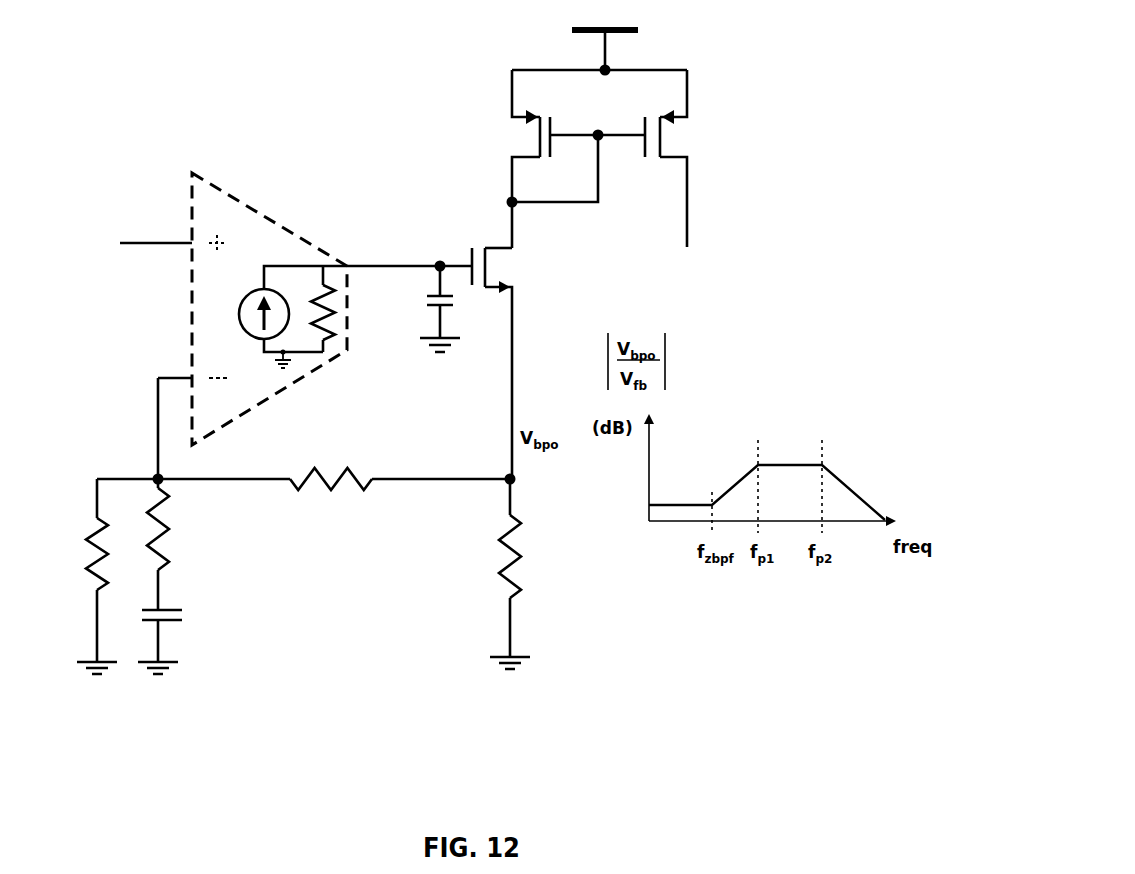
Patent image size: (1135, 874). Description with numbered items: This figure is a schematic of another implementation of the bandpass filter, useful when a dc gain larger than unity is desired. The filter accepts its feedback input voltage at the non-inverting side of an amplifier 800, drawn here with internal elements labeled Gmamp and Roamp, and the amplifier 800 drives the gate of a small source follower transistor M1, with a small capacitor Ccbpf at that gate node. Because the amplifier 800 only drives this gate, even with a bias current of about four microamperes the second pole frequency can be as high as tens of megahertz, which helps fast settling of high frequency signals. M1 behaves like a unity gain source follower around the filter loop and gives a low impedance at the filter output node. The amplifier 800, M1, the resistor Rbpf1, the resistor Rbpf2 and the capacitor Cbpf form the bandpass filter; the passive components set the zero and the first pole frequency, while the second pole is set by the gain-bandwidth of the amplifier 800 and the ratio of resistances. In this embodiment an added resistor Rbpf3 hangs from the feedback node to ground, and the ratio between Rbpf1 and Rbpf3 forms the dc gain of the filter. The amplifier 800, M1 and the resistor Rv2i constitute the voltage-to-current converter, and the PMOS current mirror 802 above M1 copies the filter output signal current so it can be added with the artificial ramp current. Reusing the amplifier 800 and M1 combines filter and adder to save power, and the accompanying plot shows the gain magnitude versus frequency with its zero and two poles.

The amplifier 800 is at (262, 308).
The PMOS current mirror 802 is at (712, 134).
The source follower transistor M1 is at (440, 363).
The compensation capacitor Ccbpf is at (459, 307).
The transconductance current source Gmamp is at (259, 317).
The output resistor Roamp is at (357, 309).
The first bandpass filter resistor Rbpf1 is at (306, 466).
The second bandpass filter resistor Rbpf2 is at (188, 544).
The third bandpass filter resistor Rbpf3 is at (74, 576).
The bandpass filter capacitor Cbpf is at (183, 642).
The voltage-to-current resistor Rv2i is at (491, 574).